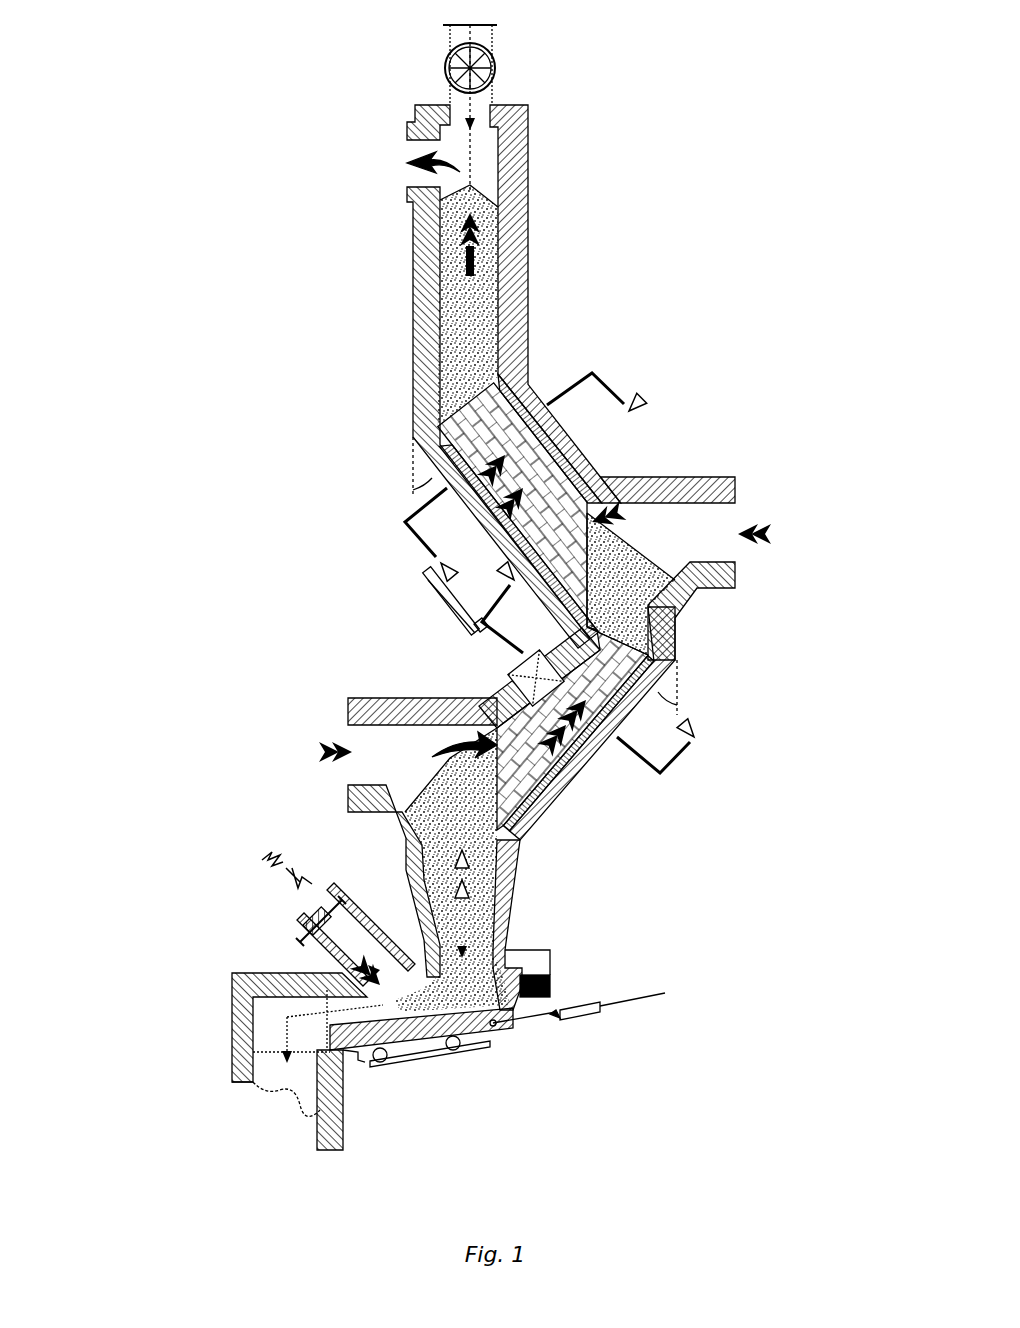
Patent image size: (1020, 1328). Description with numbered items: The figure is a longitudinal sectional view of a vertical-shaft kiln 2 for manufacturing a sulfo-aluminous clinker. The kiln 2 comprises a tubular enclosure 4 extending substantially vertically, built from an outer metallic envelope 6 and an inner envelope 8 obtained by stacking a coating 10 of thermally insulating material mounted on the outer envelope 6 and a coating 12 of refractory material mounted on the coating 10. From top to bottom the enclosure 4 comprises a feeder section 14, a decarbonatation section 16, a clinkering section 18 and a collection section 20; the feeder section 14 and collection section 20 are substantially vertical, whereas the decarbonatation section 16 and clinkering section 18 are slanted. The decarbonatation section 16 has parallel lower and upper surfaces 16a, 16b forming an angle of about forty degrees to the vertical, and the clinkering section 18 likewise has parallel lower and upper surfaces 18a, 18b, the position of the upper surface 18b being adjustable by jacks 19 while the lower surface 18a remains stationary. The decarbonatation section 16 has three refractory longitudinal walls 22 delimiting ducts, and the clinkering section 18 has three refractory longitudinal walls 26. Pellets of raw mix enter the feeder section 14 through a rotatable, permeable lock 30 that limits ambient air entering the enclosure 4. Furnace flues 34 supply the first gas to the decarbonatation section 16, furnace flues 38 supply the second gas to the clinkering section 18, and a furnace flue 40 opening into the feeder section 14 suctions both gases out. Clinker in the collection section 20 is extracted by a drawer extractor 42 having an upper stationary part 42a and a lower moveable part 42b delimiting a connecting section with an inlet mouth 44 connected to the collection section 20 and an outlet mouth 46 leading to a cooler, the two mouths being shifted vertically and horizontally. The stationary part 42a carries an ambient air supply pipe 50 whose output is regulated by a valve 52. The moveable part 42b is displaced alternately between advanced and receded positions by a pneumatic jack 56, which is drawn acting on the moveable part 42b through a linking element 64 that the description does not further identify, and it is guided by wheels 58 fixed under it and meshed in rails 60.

The vertical-shaft kiln 2 is at (711, 116).
The tubular enclosure 4 is at (540, 268).
The outer metallic envelope 6 is at (528, 324).
The inner envelope 8 is at (543, 304).
The coating in a thermally insulating material 10 is at (529, 152).
The coating in a refractory material 12 is at (527, 192).
The feeder section 14 is at (398, 202).
The decarbonatation section 16 is at (498, 513).
The lower surface of the decarbonatation section 16a is at (467, 503).
The upper surface of the decarbonatation section 16b is at (583, 440).
The clinkering section 18 is at (556, 740).
The lower surface of the clinkering section 18a is at (590, 770).
The upper surface of the clinkering section 18b is at (537, 692).
The jacks 19 is at (442, 597).
The collection section 20 is at (502, 870).
The longitudinal walls 22 is at (523, 407).
The longitudinal walls 26 is at (558, 797).
The lock 30 is at (446, 66).
The furnace flues 34 is at (710, 477).
The furnace flues 38 is at (350, 700).
The furnace flue 40 is at (413, 148).
The drawer extractor 42 is at (424, 1045).
The upper stationary part 42a is at (240, 975).
The lower moveable part 42b is at (420, 1055).
The inlet mouth 44 is at (480, 923).
The outlet mouth 46 is at (225, 1047).
The ambient air supply pipe 50 is at (305, 957).
The valve 52 is at (292, 908).
The pneumatic jack 56 is at (607, 1033).
The wheels 58 is at (462, 1052).
The rails 60 is at (400, 1068).
The push rod 64 is at (556, 1016).